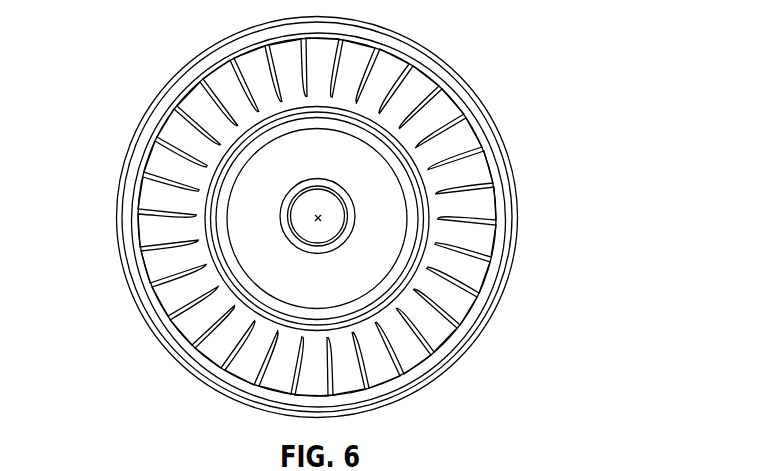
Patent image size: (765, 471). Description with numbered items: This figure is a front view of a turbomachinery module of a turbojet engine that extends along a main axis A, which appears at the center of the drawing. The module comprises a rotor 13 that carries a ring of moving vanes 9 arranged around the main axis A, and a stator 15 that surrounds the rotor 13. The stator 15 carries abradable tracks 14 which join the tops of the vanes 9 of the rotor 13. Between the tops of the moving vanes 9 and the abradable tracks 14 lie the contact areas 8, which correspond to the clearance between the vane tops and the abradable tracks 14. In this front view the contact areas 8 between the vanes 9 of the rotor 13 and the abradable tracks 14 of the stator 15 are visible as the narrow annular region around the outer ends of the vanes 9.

The contact area 8 is at (266, 224).
The moving vane 9 is at (167, 298).
The rotor 13 is at (440, 333).
The abradable track 14 is at (334, 35).
The stator 15 is at (519, 206).
The main axis A is at (318, 222).